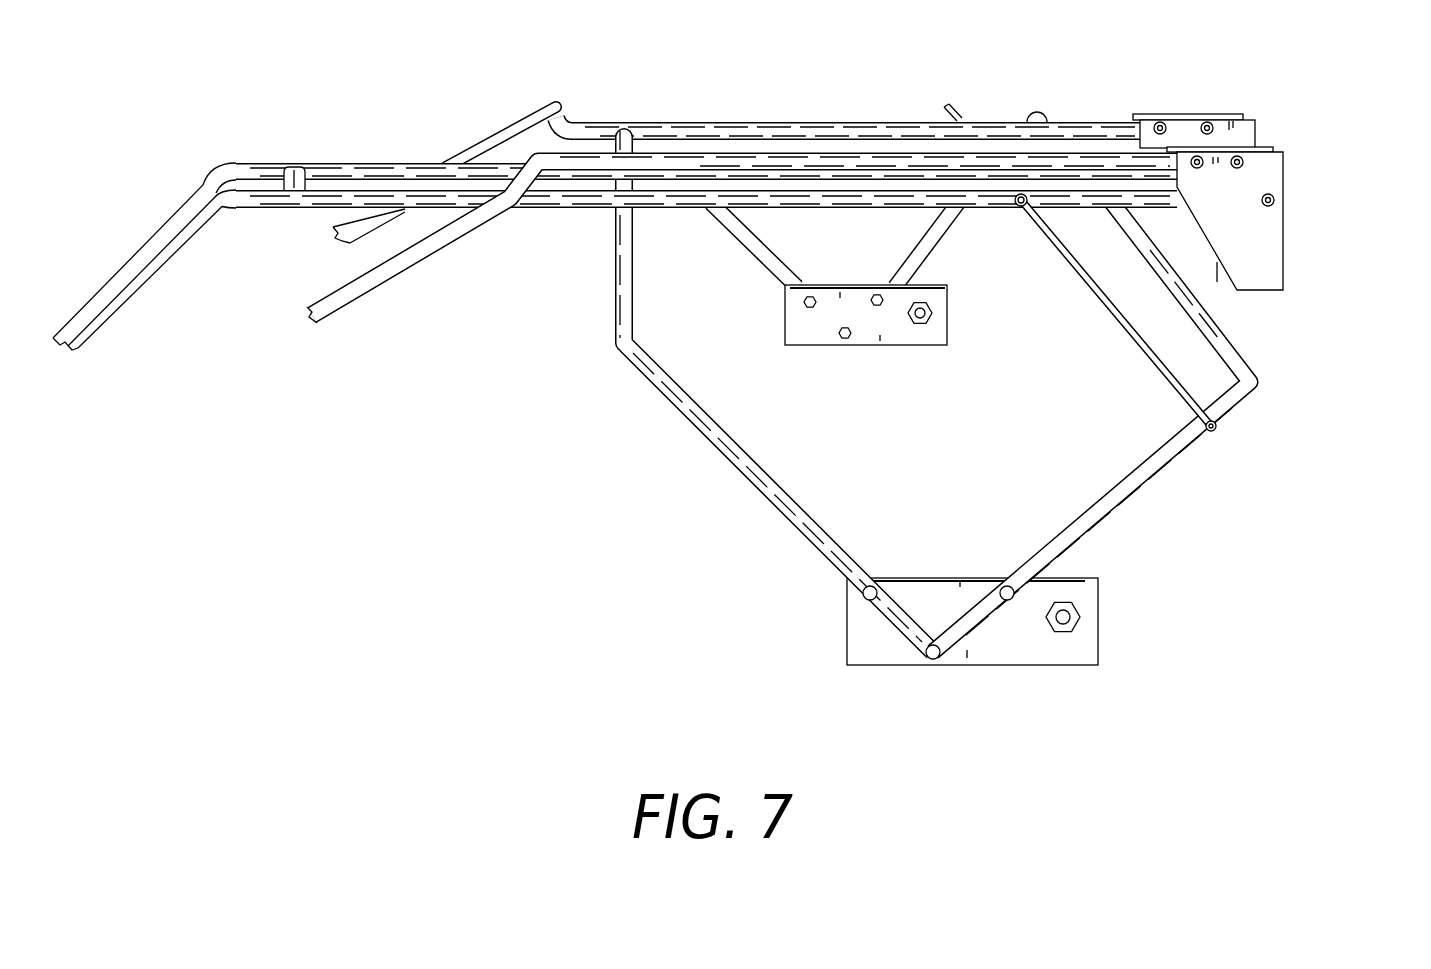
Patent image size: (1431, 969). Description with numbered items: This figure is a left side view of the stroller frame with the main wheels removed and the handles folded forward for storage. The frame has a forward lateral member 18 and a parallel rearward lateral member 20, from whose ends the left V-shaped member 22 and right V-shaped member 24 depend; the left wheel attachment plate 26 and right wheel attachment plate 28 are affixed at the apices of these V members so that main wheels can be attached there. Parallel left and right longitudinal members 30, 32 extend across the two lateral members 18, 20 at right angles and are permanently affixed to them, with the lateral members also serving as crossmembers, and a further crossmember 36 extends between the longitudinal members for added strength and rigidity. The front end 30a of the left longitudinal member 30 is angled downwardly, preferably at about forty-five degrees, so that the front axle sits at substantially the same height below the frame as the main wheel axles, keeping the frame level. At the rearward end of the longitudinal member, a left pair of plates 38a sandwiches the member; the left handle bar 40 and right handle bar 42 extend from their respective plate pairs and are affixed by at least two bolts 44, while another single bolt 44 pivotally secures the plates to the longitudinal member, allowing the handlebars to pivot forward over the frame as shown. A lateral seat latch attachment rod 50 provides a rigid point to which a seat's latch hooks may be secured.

The first or forward lateral member 18 is at (614, 273).
The second or rearward lateral member 20 is at (1238, 348).
The left V-shaped member 22 is at (1013, 578).
The right V-shaped member 24 is at (887, 277).
The left wheel attachment plate 26 is at (1020, 666).
The right wheel attachment plate 28 is at (908, 347).
The left longitudinal member 30 is at (653, 209).
The front end of left longitudinal member 30a is at (122, 297).
The right longitudinal member 32 is at (366, 163).
The crossmember 36 is at (304, 167).
The left pair of plates 38a is at (1283, 150).
The left handle bar 40 is at (723, 157).
The right handle bar 42 is at (678, 122).
The bolt 44 is at (1236, 156).
The right lateral seat latch attachment rod 50 is at (1133, 338).